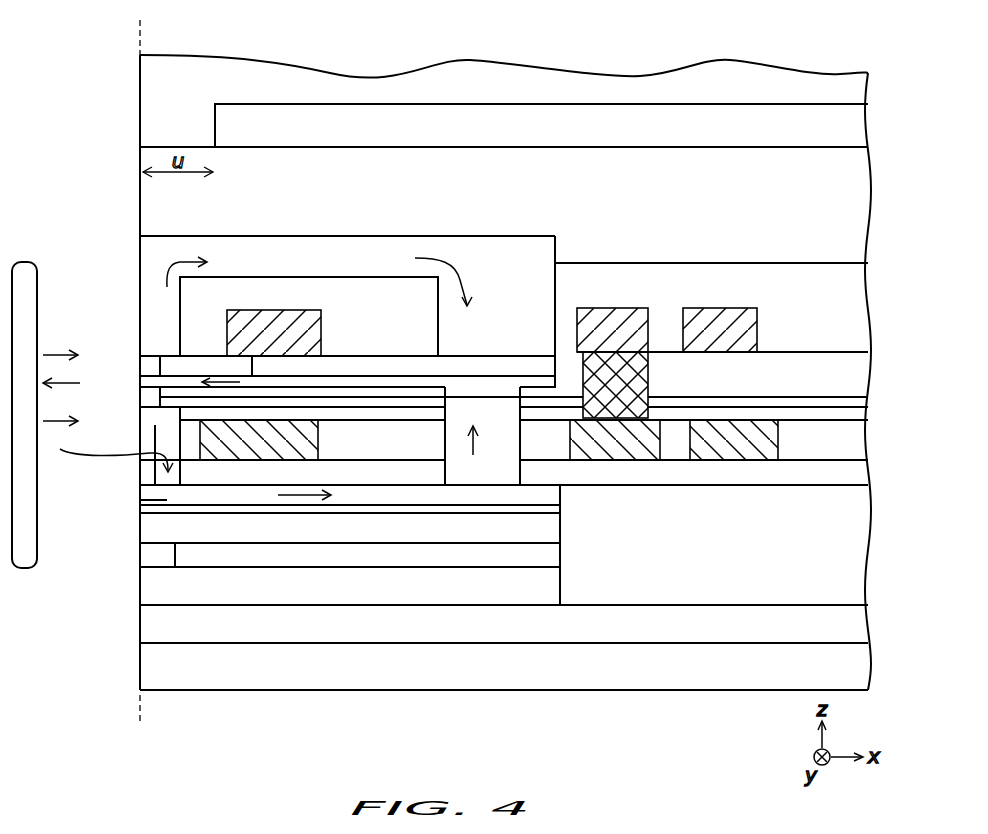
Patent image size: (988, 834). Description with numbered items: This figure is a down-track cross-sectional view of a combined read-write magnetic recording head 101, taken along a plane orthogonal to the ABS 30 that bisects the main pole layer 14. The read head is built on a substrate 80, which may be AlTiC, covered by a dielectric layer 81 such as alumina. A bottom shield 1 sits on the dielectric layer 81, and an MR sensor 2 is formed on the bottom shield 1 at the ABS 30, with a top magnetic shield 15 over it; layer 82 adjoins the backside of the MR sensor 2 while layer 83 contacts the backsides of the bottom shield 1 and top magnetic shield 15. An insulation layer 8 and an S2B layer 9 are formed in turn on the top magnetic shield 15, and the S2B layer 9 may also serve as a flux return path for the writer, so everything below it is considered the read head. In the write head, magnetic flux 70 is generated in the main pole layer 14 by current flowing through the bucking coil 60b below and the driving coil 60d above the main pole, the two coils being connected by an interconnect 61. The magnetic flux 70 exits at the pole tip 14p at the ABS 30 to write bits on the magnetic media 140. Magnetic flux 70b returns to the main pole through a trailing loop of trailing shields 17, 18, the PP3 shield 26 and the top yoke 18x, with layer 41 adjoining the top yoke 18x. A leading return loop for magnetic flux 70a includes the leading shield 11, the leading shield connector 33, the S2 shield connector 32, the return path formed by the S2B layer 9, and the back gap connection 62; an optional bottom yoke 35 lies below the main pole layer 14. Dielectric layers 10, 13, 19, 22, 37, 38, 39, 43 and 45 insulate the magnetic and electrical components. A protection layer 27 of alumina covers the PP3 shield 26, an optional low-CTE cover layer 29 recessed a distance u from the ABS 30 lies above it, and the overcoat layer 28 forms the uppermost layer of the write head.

The magnetic recording head 101 is at (58, 118).
The ABS 30 is at (138, 22).
The overcoat layer 28 is at (150, 105).
The cover layer 29 is at (855, 119).
The protection layer 27 is at (150, 208).
The PP3 shield 26 is at (150, 256).
The dielectric layer 45 is at (197, 307).
The dielectric layer 22 is at (192, 365).
The layer 41 is at (172, 366).
The trailing shield 18 is at (147, 362).
The trailing shield 17 is at (146, 378).
The pole tip 14p is at (147, 382).
The main pole layer 14 is at (513, 382).
The dielectric layer 13 is at (148, 392).
The leading shield 11 is at (148, 401).
The leading shield connector 33 is at (150, 419).
The S2 shield connector 32 is at (160, 430).
The dielectric layer 10 is at (148, 468).
The dielectric layer 19 is at (148, 492).
The S2B layer 9 is at (148, 500).
The insulation layer 8 is at (148, 510).
The top magnetic shield 15 is at (155, 530).
The MR sensor 2 is at (155, 556).
The bottom shield 1 is at (155, 585).
The dielectric layer 81 is at (155, 622).
The substrate 80 is at (155, 666).
The magnetic media 140 is at (24, 568).
The magnetic flux 70b is at (256, 297).
The magnetic flux 70 is at (265, 712).
The magnetic flux 70a is at (298, 712).
The driving coil 60d is at (256, 320).
The bottom yoke 35 is at (377, 393).
The top yoke 18x is at (493, 368).
The interconnect 61 is at (648, 367).
The dielectric layer 43 is at (855, 366).
The dielectric layer 39 is at (855, 400).
The dielectric layer 38 is at (852, 412).
The dielectric layer 37 is at (852, 440).
The layer 83 is at (852, 521).
The bucking coil 60b is at (230, 452).
The back gap connection 62 is at (495, 470).
The layer 82 is at (532, 558).